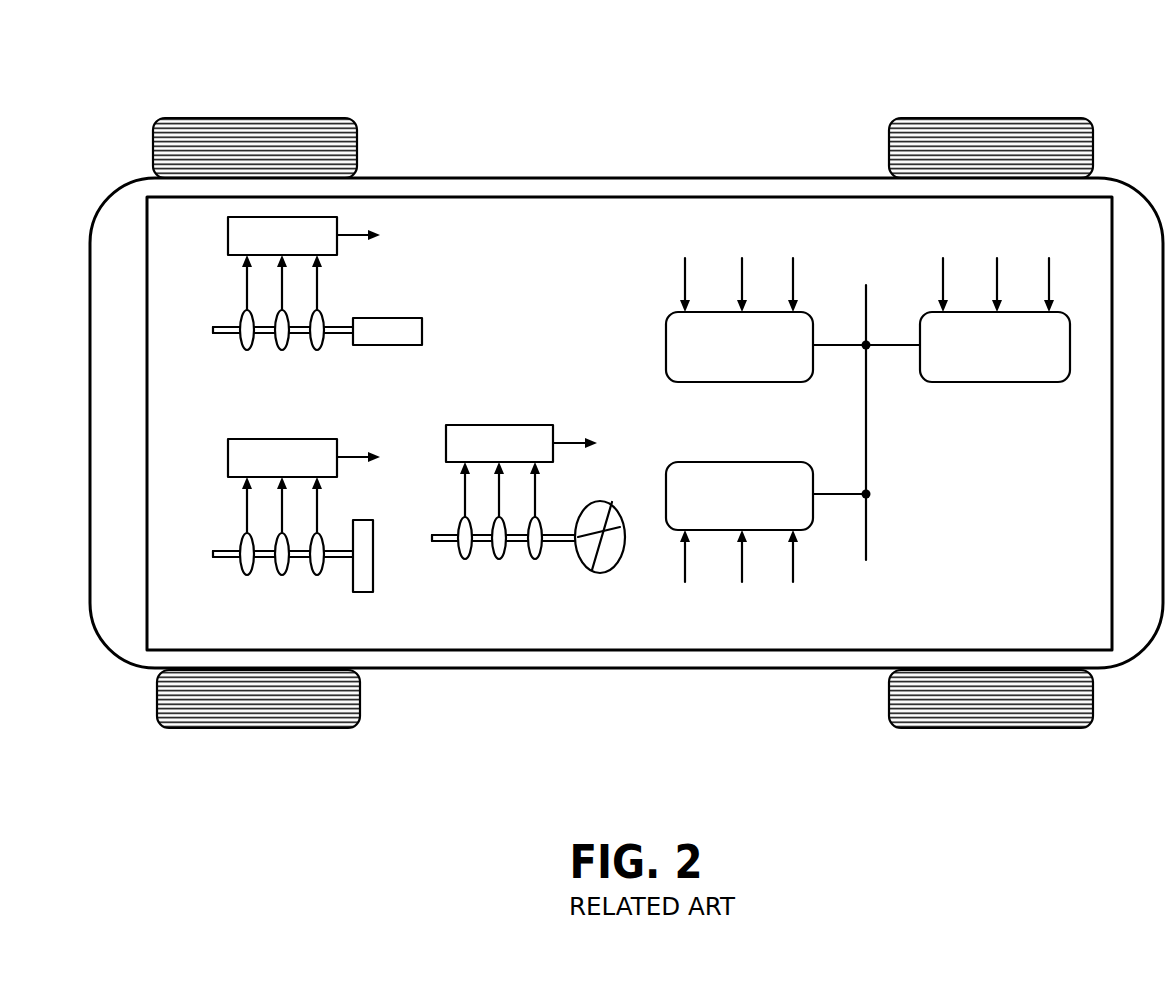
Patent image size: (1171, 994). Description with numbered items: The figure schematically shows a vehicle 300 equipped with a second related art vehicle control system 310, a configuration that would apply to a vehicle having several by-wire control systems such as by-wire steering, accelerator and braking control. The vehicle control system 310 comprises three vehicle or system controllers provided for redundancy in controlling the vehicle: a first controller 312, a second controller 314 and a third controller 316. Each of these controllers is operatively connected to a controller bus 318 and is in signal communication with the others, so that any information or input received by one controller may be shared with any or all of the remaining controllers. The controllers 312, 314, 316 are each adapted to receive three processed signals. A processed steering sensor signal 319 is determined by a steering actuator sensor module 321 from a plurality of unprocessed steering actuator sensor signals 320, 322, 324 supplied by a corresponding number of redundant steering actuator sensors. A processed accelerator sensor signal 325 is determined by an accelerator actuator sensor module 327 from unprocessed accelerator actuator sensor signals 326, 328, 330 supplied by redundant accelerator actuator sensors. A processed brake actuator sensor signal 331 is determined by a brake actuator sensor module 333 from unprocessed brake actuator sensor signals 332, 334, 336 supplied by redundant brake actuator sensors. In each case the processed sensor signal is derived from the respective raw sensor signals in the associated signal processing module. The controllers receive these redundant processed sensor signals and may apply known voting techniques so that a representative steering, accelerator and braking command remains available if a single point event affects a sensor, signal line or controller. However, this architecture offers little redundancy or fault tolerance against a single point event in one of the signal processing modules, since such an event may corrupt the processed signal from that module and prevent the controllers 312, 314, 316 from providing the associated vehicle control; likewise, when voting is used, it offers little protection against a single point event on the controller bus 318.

The vehicle 300 is at (815, 118).
The vehicle control system 310 is at (692, 197).
The first controller 312 is at (777, 382).
The second controller 314 is at (690, 462).
The third controller 316 is at (992, 382).
The controller bus 318 is at (866, 458).
The processed steering sensor signal 319 is at (562, 442).
The unprocessed steering actuator sensor signal 320 is at (462, 493).
The steering actuator sensor module 321 is at (485, 425).
The unprocessed steering actuator sensor signal 322 is at (503, 493).
The unprocessed steering actuator sensor signal 324 is at (537, 493).
The processed accelerator sensor signal 325 is at (350, 235).
The unprocessed accelerator actuator sensor signal 326 is at (245, 290).
The accelerator actuator sensor module 327 is at (228, 225).
The unprocessed accelerator actuator sensor signal 328 is at (287, 288).
The unprocessed accelerator actuator sensor signal 330 is at (318, 287).
The processed brake actuator sensor signal 331 is at (348, 457).
The unprocessed brake actuator sensor signal 332 is at (245, 515).
The brake actuator sensor module 333 is at (228, 449).
The unprocessed brake actuator sensor signal 334 is at (287, 512).
The unprocessed brake actuator sensor signal 336 is at (318, 512).